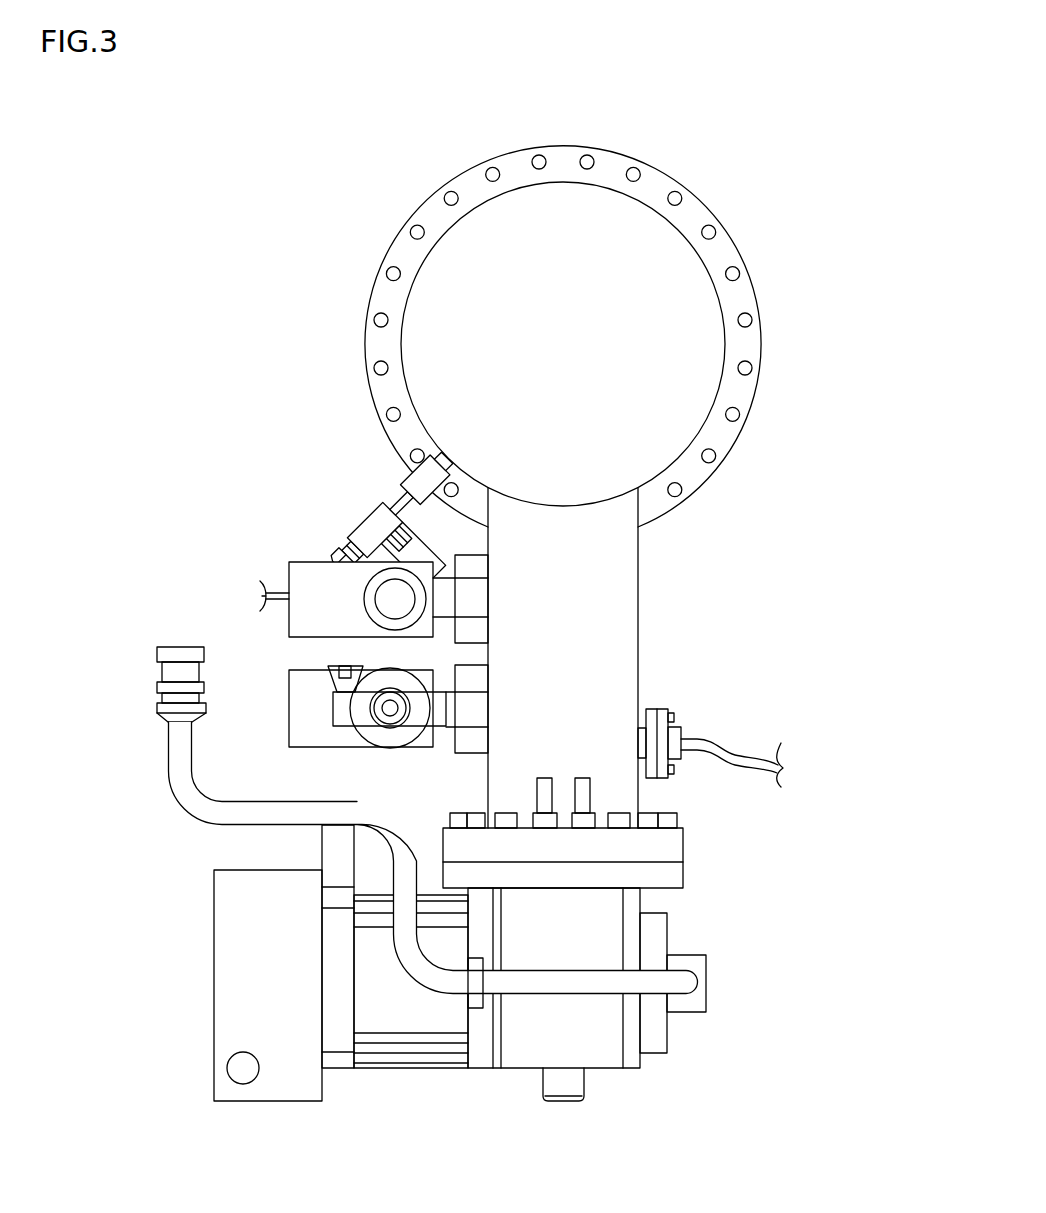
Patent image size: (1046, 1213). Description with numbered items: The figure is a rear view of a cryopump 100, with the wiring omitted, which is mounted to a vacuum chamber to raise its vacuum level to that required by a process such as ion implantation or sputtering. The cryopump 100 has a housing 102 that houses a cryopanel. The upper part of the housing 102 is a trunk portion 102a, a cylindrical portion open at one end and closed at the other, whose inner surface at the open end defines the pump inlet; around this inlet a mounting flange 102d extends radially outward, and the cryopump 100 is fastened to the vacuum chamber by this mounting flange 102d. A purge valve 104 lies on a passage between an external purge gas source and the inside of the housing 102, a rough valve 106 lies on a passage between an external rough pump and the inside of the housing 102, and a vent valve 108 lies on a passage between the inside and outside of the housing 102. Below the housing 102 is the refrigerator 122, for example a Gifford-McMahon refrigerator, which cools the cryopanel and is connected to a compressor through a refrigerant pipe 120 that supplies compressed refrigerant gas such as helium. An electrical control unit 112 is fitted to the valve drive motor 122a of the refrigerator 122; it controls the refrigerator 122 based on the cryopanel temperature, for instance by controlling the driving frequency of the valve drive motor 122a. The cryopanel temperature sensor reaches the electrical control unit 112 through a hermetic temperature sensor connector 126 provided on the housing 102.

The cryopump 100 is at (468, 638).
The housing 102 is at (615, 596).
The trunk portion 102a is at (672, 283).
The mounting flange 102d is at (609, 165).
The purge valve 104 is at (373, 522).
The rough valve 106 is at (312, 570).
The vent valve 108 is at (300, 683).
The electrical control unit 112 is at (278, 1087).
The refrigerant pipe 120 is at (198, 804).
The refrigerator 122 is at (604, 1038).
The valve drive motor 122a is at (400, 1013).
The temperature sensor connector 126 is at (663, 737).